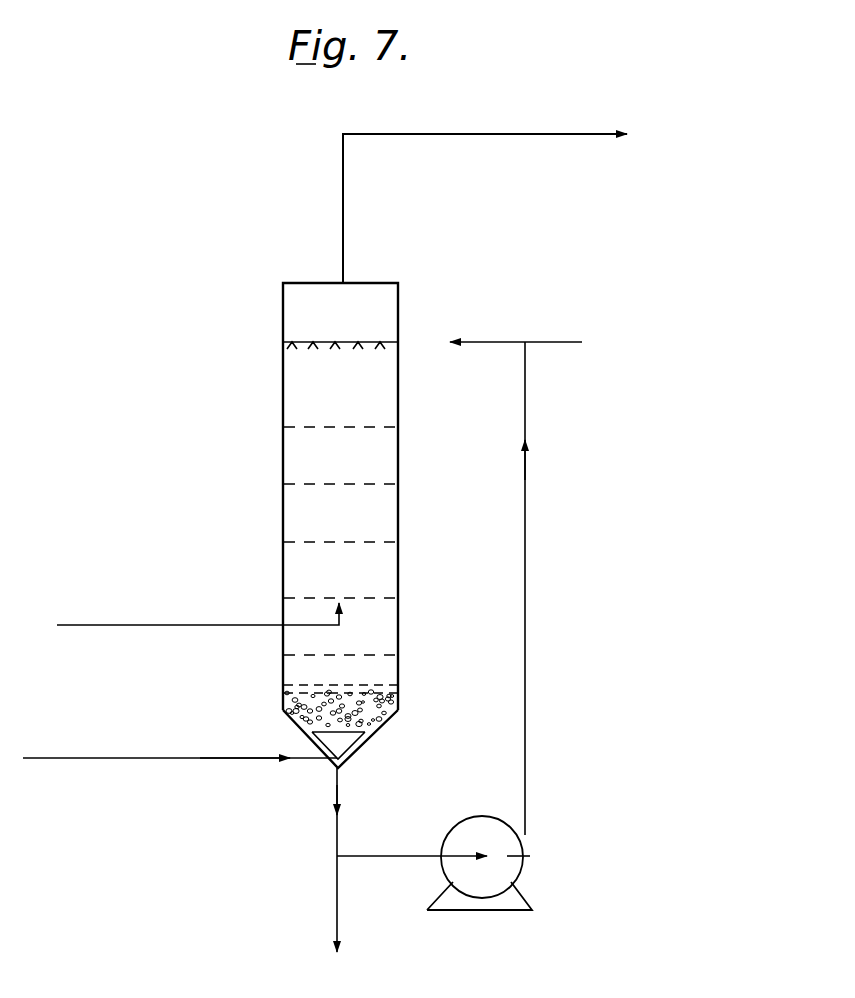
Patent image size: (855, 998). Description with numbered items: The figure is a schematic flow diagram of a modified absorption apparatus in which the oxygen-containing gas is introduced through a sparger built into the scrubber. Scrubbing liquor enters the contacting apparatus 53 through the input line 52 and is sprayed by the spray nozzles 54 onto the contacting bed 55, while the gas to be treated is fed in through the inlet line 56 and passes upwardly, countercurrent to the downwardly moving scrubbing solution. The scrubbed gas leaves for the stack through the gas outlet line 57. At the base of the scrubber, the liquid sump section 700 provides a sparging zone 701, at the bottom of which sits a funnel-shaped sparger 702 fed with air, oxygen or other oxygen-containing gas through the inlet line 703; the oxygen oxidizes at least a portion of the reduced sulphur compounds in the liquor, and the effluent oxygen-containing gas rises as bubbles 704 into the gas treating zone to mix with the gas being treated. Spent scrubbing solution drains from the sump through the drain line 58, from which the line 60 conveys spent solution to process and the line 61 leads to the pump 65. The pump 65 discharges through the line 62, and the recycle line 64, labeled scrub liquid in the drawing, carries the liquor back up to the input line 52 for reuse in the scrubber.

The input line 52 is at (508, 342).
The contacting apparatus 53 is at (303, 453).
The spray nozzles 54 is at (342, 341).
The contacting bed 55 is at (399, 416).
The inlet line 56 is at (207, 627).
The gas outlet line 57 is at (343, 233).
The drain line 58 is at (337, 792).
The line 60 is at (335, 903).
The line 61 is at (397, 858).
The line 62 is at (525, 835).
The recycle line 64 is at (527, 490).
The pump 65 is at (540, 850).
The liquid sump section 700 is at (474, 714).
The sparging zone 701 is at (282, 699).
The funnel-shaped sparger 702 is at (343, 745).
The inlet line 703 is at (42, 758).
The bubbles 704 is at (385, 722).